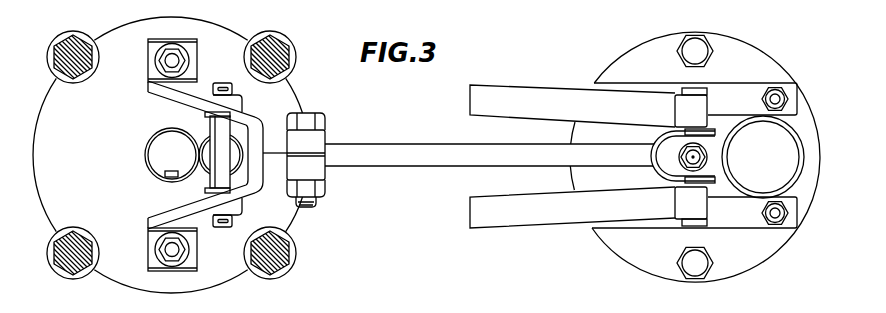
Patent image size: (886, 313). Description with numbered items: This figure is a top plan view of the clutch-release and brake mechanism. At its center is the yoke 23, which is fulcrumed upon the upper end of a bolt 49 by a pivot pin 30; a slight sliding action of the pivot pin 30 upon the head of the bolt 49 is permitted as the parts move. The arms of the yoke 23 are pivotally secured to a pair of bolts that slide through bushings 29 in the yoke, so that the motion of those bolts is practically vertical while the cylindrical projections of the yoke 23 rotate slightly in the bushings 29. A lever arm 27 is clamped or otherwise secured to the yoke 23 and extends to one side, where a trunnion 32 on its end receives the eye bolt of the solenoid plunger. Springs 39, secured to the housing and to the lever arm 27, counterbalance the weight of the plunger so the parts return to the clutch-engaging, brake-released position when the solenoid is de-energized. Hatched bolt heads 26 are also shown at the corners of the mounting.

The yoke 23 is at (167, 208).
The bolt 26 is at (283, 44).
The lever arm 27 is at (386, 144).
The bushings 29 is at (148, 242).
The pivot pin 30 is at (210, 189).
The trunnion 32 is at (708, 90).
The springs 39 is at (470, 213).
The bolt 49 is at (210, 136).